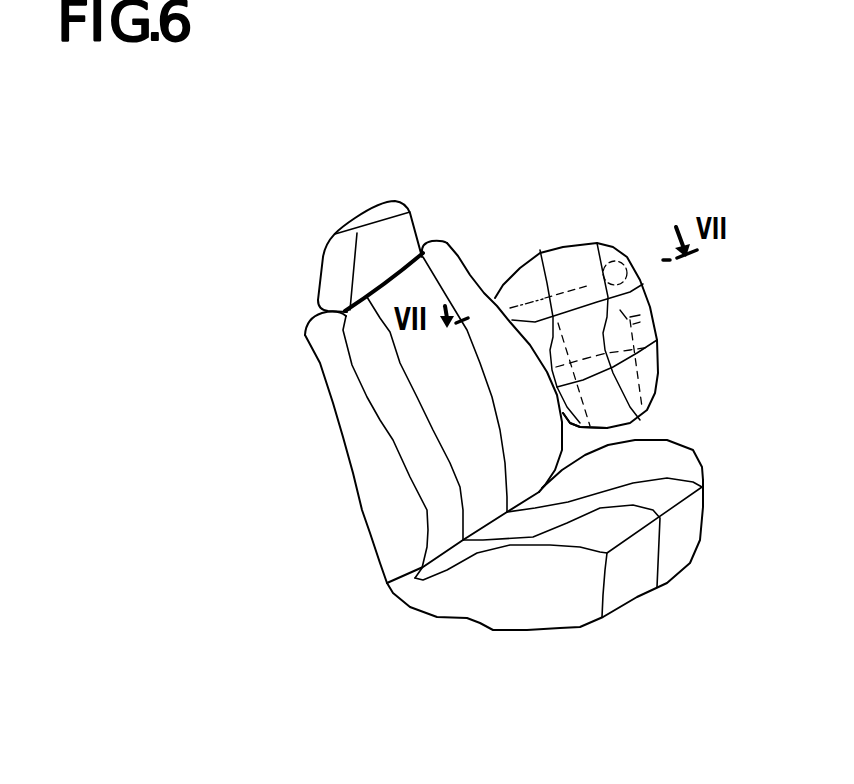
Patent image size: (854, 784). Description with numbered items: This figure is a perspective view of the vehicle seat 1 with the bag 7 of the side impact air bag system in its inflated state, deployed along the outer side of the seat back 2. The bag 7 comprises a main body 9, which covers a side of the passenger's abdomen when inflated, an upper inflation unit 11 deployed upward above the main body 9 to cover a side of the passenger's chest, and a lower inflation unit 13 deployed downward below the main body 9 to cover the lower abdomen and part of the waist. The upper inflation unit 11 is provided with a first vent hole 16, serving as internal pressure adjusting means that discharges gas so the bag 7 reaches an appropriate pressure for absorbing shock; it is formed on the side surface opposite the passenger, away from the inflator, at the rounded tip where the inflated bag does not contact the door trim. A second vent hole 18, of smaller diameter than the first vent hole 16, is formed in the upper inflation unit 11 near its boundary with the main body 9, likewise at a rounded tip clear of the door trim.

The vehicle seat 1 is at (482, 644).
The seat back 2 is at (393, 442).
The bag 7 is at (568, 238).
The main body 9 is at (596, 374).
The upper inflation unit 11 is at (523, 278).
The lower inflation unit 13 is at (625, 413).
The first vent hole 16 is at (621, 263).
The second vent hole 18 is at (650, 317).